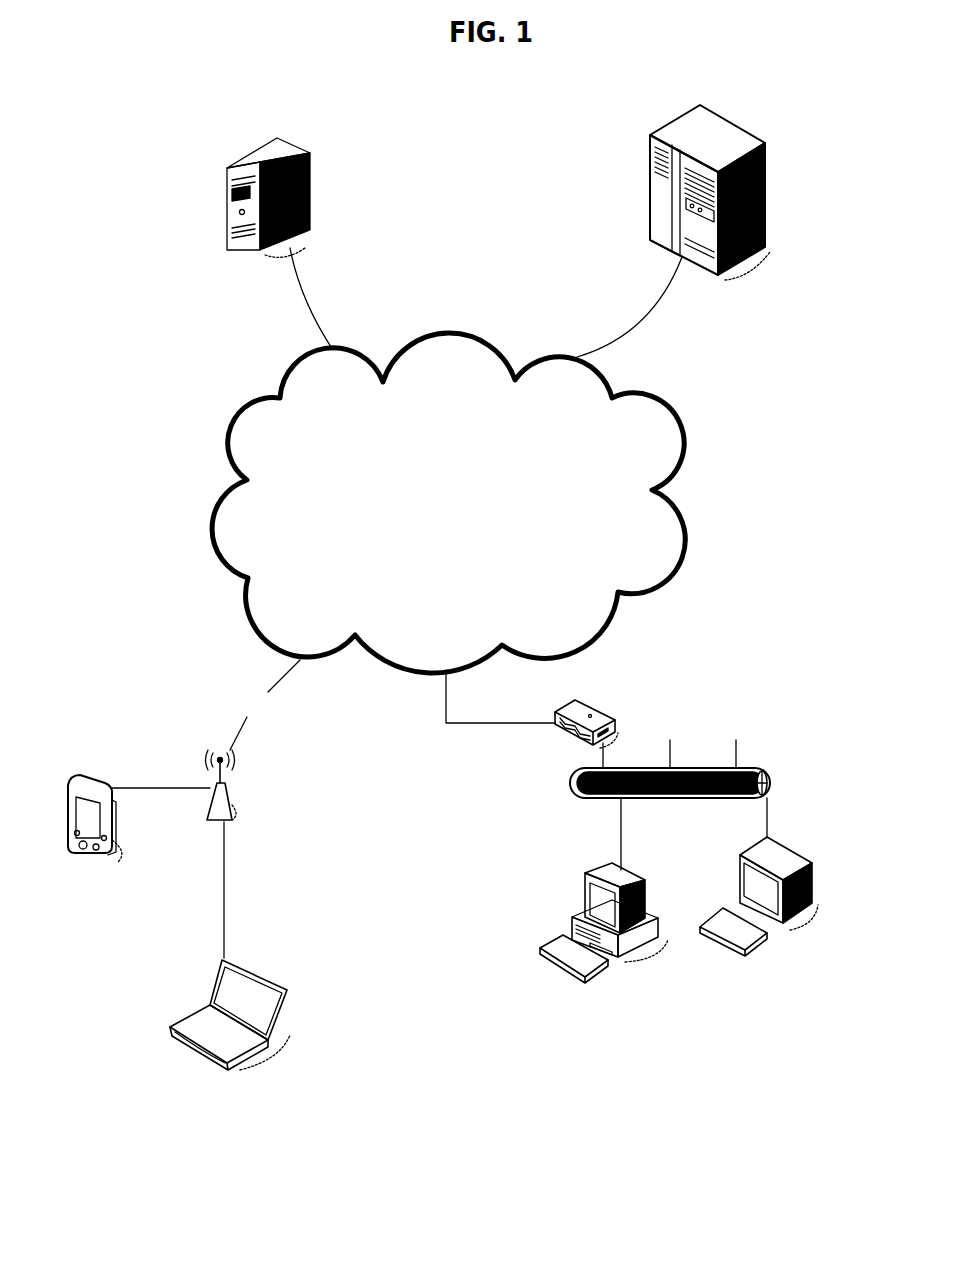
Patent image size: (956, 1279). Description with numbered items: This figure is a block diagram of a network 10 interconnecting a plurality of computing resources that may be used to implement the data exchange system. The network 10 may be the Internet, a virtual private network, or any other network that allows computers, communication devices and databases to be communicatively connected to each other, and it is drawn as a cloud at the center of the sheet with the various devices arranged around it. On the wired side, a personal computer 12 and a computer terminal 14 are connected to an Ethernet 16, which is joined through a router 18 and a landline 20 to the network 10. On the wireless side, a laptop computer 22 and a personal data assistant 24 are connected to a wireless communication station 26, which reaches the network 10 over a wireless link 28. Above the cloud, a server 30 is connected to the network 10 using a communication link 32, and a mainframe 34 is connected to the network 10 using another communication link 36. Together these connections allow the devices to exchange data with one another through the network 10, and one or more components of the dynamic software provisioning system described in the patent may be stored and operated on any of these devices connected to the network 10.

The network 10 is at (448, 503).
The personal computer 12 is at (585, 873).
The computer terminal 14 is at (797, 860).
The Ethernet 16 is at (670, 769).
The router 18 is at (615, 719).
The landline 20 is at (492, 723).
The laptop computer 22 is at (270, 1047).
The personal data assistant 24 is at (93, 780).
The wireless communication station 26 is at (232, 805).
The wireless link 28 is at (265, 705).
The server 30 is at (308, 190).
The communication link 32 is at (323, 299).
The mainframe 34 is at (765, 243).
The communication link 36 is at (629, 307).